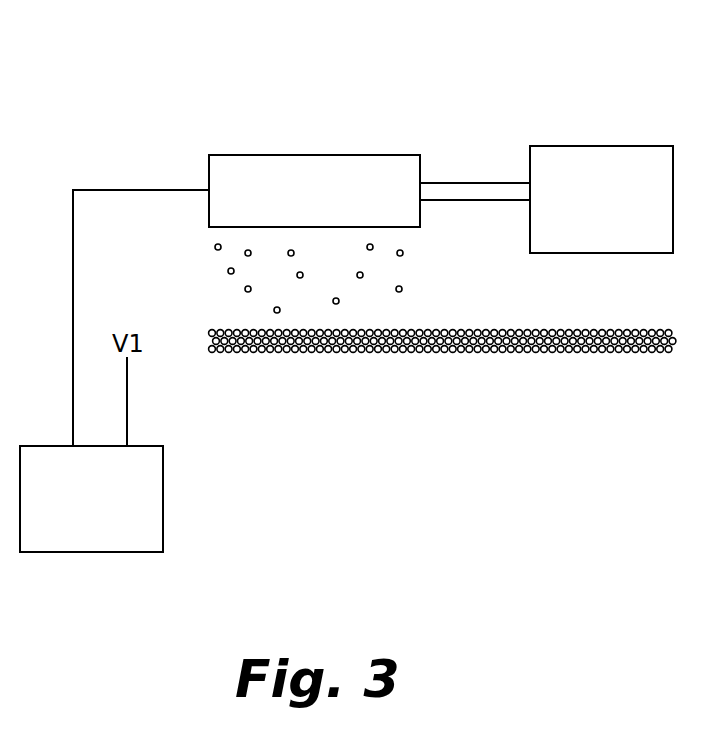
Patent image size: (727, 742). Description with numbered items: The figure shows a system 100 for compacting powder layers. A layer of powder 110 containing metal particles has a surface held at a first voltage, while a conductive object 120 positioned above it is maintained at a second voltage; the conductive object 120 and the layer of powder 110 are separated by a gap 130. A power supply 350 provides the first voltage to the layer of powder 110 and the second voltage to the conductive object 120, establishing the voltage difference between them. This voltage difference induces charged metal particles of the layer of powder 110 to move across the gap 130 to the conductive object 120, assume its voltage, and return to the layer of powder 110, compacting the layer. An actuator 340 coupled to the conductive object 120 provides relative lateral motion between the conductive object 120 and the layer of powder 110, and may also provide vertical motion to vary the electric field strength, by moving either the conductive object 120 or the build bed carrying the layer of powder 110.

The system 100 is at (432, 110).
The layer of powder 110 is at (203, 356).
The conductive object 120 is at (338, 206).
The gap 130 is at (348, 286).
The actuator 340 is at (623, 212).
The power supply 350 is at (114, 512).